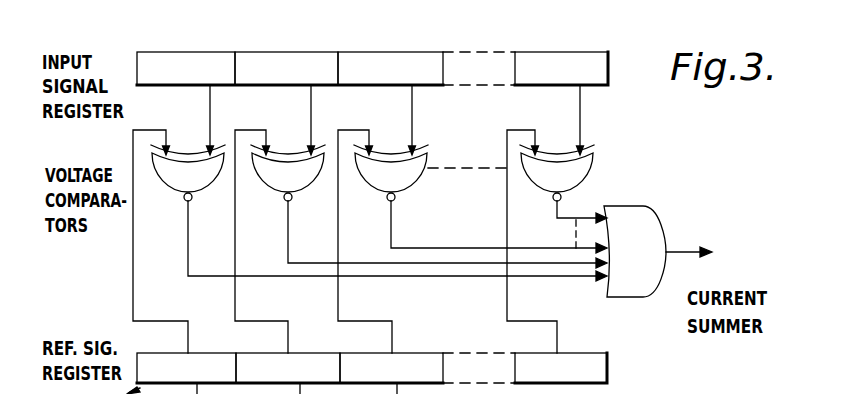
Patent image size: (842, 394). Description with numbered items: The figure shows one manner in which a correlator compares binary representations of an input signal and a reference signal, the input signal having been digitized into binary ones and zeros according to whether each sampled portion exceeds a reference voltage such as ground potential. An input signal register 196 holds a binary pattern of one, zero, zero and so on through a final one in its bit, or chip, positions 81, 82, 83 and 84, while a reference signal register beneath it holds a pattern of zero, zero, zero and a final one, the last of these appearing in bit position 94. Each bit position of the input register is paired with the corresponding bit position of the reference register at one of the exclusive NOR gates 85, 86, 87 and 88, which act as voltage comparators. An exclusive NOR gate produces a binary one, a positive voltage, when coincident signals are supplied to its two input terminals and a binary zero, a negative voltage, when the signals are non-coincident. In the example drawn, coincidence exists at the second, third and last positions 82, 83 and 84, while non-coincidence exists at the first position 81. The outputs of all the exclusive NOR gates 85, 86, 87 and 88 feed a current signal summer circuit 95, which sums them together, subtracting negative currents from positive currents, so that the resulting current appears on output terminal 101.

The input signal register 196 is at (605, 37).
The bit position 81 is at (190, 50).
The bit position 82 is at (283, 50).
The bit position 83 is at (383, 50).
The bit position 84 is at (559, 50).
The exclusive NOR gate 85 is at (176, 193).
The exclusive NOR gate 86 is at (277, 193).
The exclusive NOR gate 87 is at (379, 193).
The exclusive NOR gate 88 is at (594, 168).
The bit position 94 is at (610, 363).
The current signal summer circuit 95 is at (625, 299).
The output terminal 101 is at (685, 246).